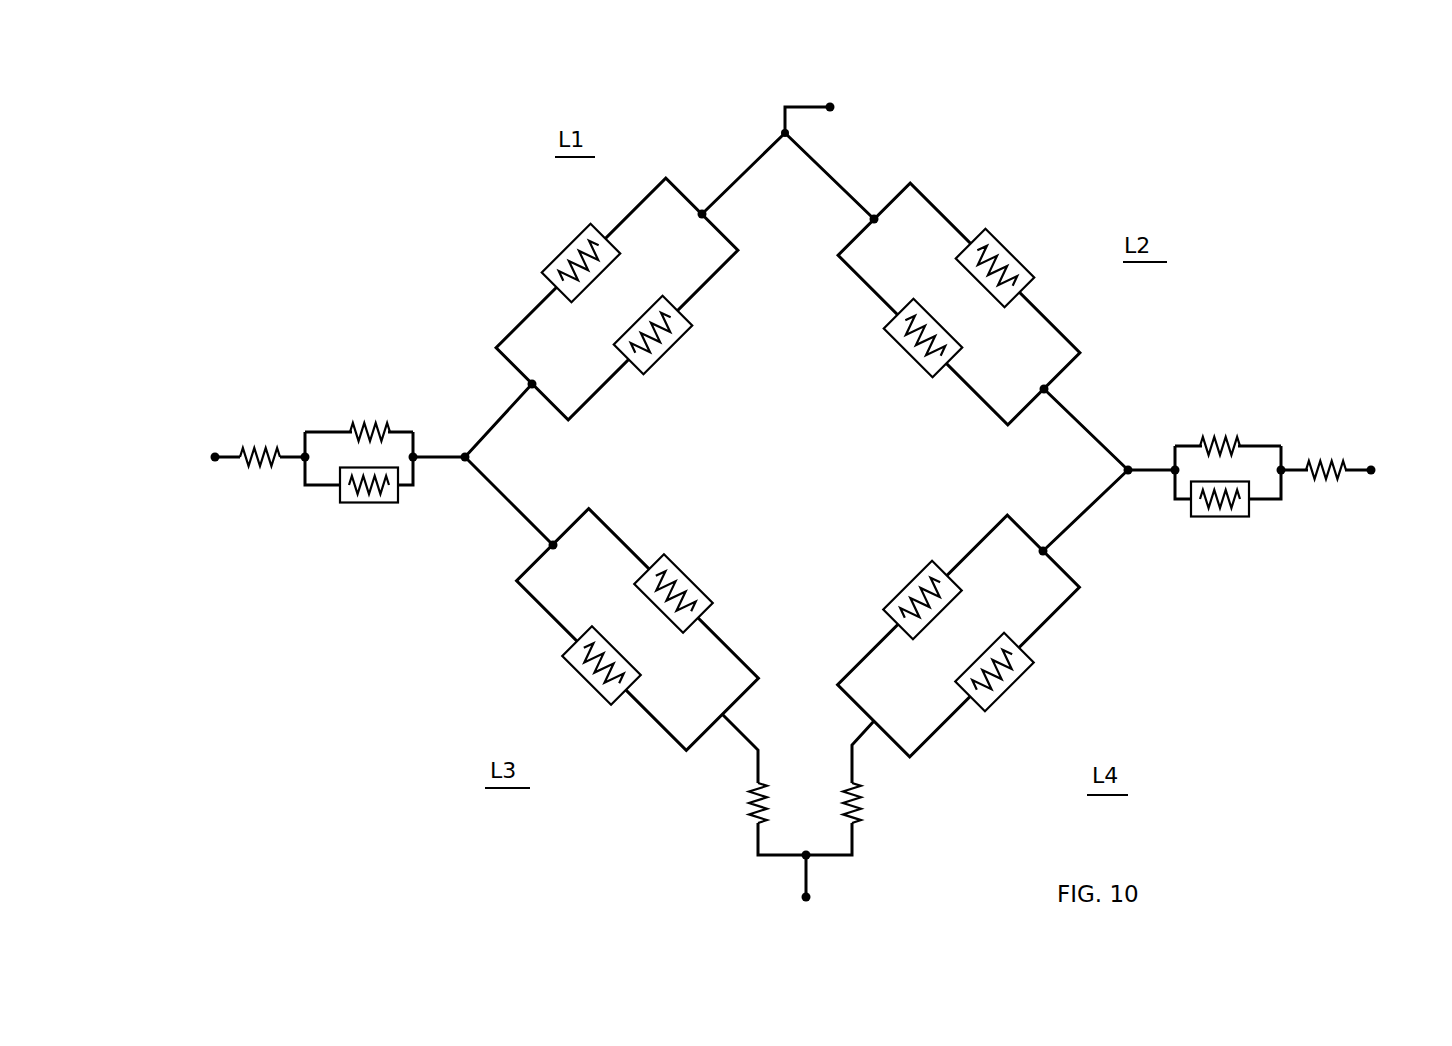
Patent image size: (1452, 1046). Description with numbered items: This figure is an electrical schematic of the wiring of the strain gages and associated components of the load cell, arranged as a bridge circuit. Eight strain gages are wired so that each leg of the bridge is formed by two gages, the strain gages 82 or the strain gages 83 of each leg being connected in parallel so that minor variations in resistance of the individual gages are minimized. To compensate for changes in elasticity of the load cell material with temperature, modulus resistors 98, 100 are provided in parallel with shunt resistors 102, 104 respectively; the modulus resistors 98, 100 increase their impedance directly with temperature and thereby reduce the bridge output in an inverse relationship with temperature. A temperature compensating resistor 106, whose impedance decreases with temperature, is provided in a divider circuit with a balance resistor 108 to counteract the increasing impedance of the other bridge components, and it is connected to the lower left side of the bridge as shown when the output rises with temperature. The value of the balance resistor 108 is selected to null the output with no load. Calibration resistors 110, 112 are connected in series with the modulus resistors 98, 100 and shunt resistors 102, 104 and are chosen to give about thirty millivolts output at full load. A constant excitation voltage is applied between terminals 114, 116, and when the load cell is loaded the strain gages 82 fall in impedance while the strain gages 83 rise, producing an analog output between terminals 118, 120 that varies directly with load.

The strain gages 82 is at (1097, 677).
The strain gages 83 is at (575, 670).
The modulus resistor 98 is at (368, 503).
The modulus resistor 100 is at (1218, 517).
The shunt resistor 102 is at (373, 423).
The shunt resistor 104 is at (1218, 440).
The temperature compensating resistor 106 is at (753, 800).
The balance resistor 108 is at (858, 800).
The calibration resistor 110 is at (1322, 463).
The calibration resistor 112 is at (262, 457).
The terminal 114 is at (213, 457).
The terminal 116 is at (1371, 471).
The terminal 118 is at (830, 107).
The terminal 120 is at (806, 897).